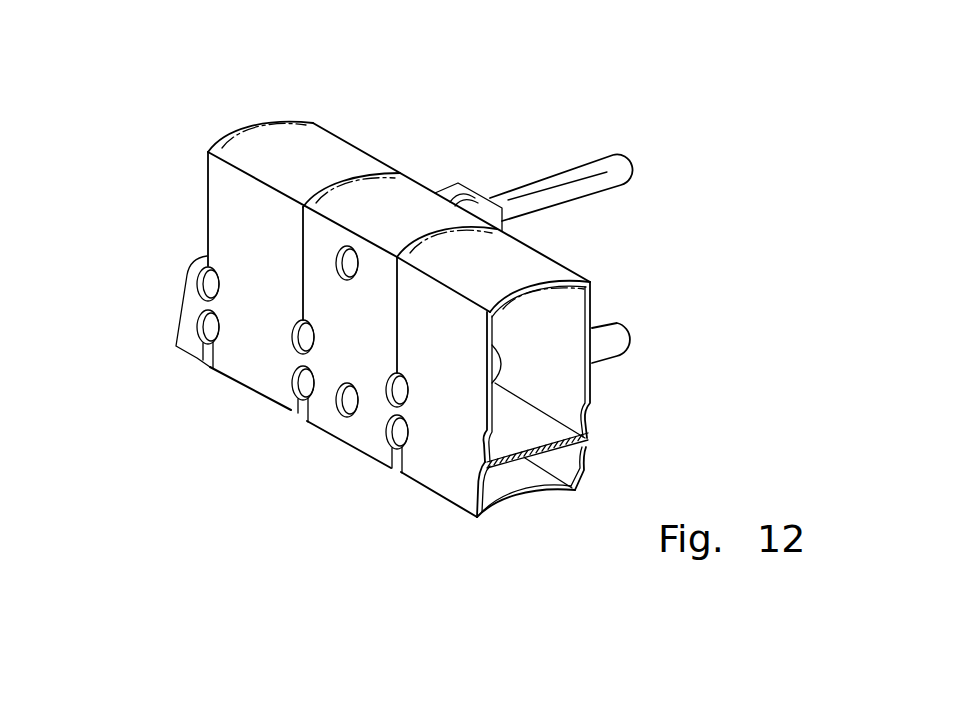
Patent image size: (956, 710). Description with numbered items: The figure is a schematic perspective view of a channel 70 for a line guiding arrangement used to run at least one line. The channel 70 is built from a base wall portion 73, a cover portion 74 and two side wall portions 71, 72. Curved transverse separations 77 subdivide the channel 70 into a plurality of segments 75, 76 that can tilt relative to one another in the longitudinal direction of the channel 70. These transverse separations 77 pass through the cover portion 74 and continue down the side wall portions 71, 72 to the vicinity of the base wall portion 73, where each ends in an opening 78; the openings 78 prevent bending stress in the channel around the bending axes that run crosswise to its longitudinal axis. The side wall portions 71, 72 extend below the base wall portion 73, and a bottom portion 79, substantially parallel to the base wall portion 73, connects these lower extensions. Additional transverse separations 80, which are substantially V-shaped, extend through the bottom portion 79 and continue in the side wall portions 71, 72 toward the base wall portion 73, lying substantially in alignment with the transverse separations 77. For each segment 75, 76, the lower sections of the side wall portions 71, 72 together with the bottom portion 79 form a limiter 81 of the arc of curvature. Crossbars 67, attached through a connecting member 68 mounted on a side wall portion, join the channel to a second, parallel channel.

The crossbars 67 is at (597, 157).
The connecting member 68 is at (458, 138).
The channel 70 is at (121, 484).
The side wall portion 71 is at (473, 395).
The side wall portion 72 is at (563, 313).
The base wall portion 73 is at (582, 450).
The cover portion 74 is at (523, 272).
The segment 75 is at (384, 544).
The segment 76 is at (279, 494).
The transverse separations 77 is at (207, 172).
The openings 78 is at (198, 283).
The bottom portion 79 is at (517, 483).
The additional transverse separations 80 is at (205, 360).
The limiter of the arc of curvature 81 is at (308, 428).